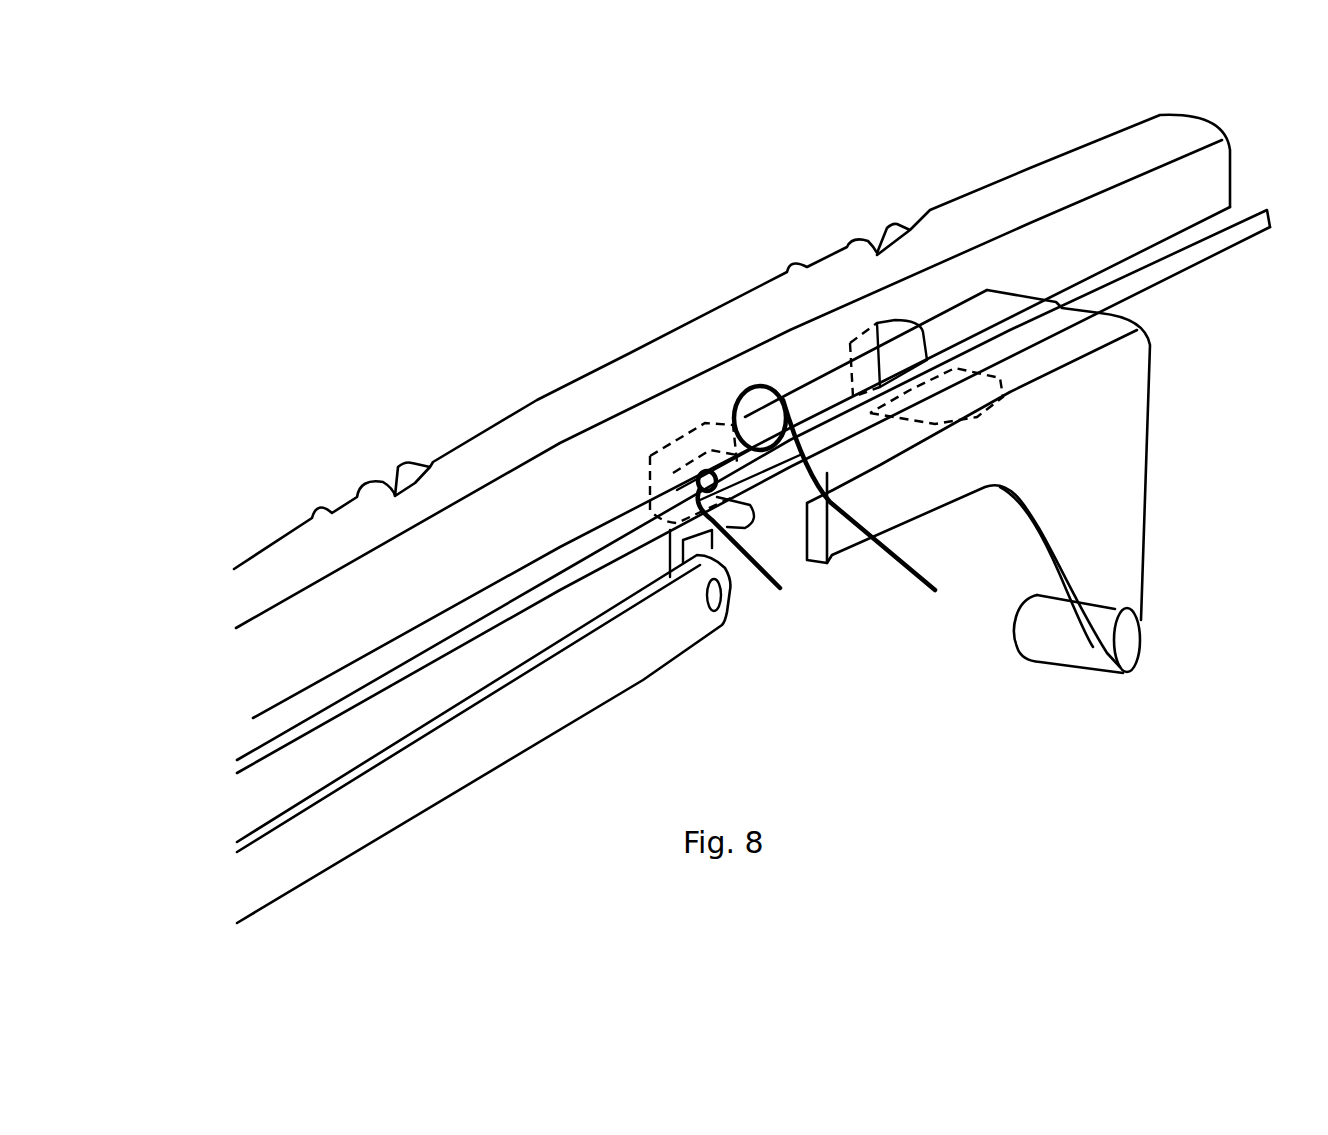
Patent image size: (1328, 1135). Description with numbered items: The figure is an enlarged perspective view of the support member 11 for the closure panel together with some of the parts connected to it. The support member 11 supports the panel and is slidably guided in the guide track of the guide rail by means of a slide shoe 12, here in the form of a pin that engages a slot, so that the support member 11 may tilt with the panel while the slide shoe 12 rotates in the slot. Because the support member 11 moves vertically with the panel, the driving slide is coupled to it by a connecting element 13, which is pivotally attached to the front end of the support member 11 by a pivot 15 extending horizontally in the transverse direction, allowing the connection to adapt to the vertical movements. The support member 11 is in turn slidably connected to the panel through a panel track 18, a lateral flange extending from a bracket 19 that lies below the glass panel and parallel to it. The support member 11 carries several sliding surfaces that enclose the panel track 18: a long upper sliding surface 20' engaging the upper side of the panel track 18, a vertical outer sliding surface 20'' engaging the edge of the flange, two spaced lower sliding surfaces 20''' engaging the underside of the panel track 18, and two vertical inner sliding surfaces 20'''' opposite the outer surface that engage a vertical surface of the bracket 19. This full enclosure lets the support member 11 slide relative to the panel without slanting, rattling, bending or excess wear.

The support member 11 is at (1093, 430).
The slide shoe 12 is at (1050, 627).
The connecting element 13 is at (532, 707).
The pivot 15 is at (720, 600).
The panel track 18 is at (618, 530).
The bracket 19 is at (520, 430).
The upper sliding surface 20' is at (854, 494).
The outer sliding surface 20'' is at (792, 538).
The lower sliding surfaces 20''' is at (1084, 380).
The inner sliding surfaces 20'''' is at (775, 310).